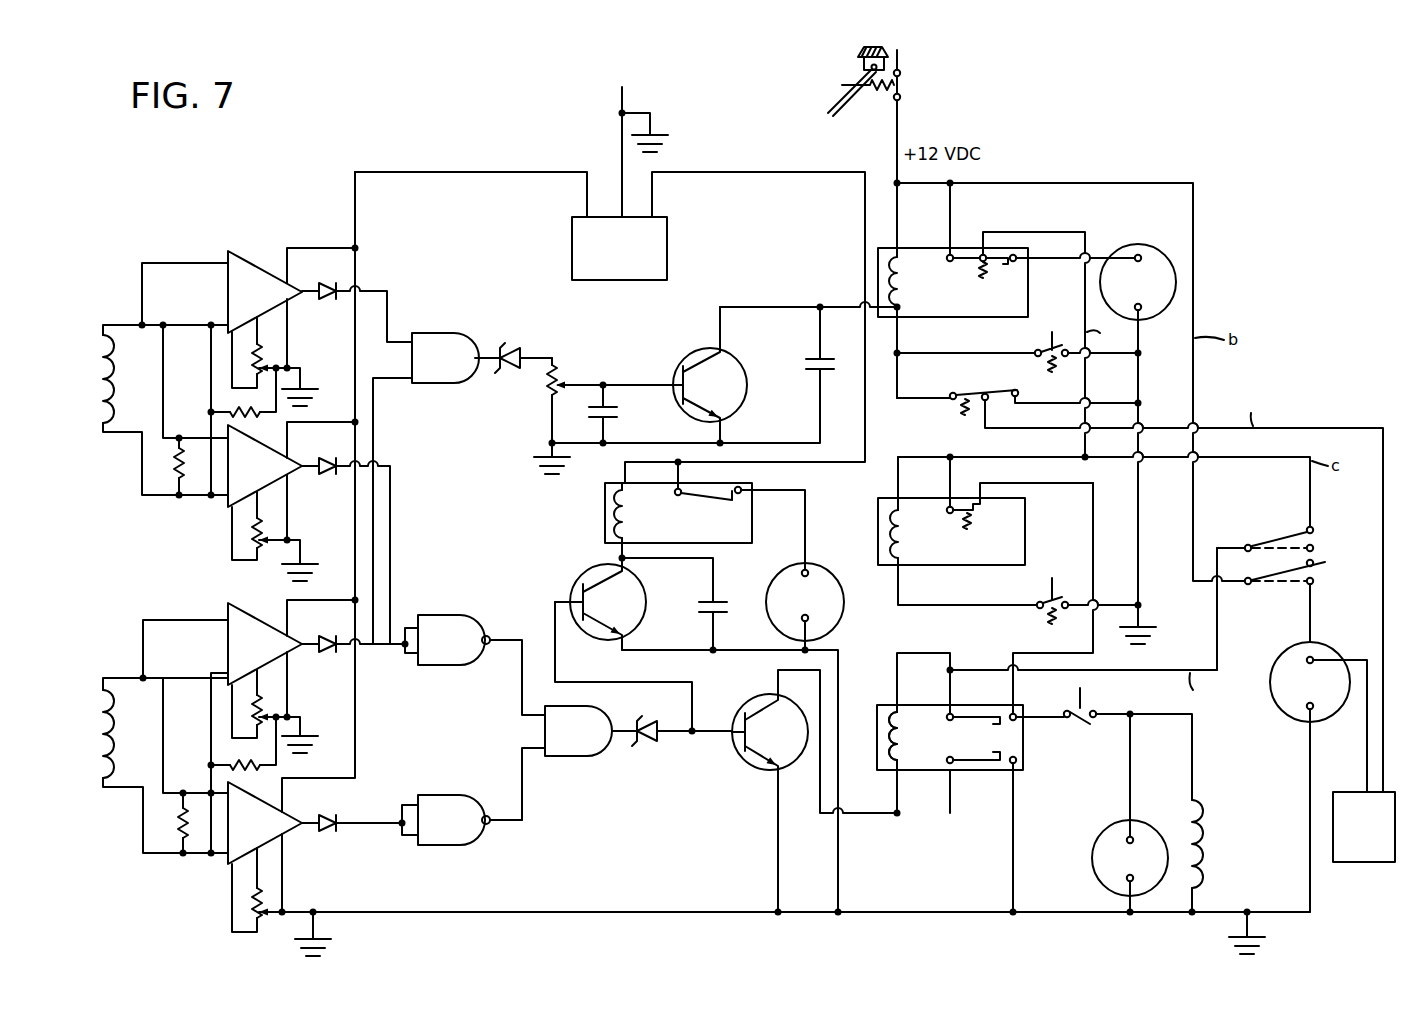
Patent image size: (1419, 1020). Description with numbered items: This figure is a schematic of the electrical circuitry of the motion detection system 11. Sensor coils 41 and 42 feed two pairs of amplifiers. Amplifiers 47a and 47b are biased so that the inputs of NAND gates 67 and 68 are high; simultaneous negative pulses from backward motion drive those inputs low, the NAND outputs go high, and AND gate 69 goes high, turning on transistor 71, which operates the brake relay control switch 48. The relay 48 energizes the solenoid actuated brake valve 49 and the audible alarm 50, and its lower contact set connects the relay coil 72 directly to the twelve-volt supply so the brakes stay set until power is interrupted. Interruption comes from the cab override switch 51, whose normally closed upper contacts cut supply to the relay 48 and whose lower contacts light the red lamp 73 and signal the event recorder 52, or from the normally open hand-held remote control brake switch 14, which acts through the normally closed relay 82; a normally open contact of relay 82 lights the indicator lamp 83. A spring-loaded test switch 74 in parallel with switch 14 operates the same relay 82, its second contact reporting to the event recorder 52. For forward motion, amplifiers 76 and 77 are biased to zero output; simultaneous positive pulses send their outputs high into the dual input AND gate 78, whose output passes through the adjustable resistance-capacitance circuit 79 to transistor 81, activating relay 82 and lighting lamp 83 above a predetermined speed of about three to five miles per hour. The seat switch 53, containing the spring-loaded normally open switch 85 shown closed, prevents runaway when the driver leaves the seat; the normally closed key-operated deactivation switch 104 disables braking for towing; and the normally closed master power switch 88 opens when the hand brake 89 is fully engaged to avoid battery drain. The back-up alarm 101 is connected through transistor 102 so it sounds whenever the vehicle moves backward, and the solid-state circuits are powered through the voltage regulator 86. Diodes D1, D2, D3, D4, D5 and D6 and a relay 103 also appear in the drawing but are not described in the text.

The motion detection system 11 is at (193, 210).
The sensor coil 42 is at (116, 394).
The sensor coil 41 is at (120, 746).
The amplifier 77 is at (265, 302).
The amplifier 47b is at (272, 477).
The amplifier 76 is at (265, 655).
The amplifier 47a is at (272, 834).
The diode D1 is at (357, 312).
The diode D2 is at (346, 551).
The diode D3 is at (355, 657).
The diode D4 is at (360, 831).
The zener diode D5 is at (523, 368).
The zener diode D6 is at (682, 741).
The dual input AND gate 78 is at (449, 370).
The resistance-capacitance circuit 79 is at (558, 382).
The transistor 81 is at (721, 396).
The voltage regulator 86 is at (631, 276).
The relay 103 is at (693, 527).
The transistor 102 is at (626, 614).
The back-up alarm 101 is at (823, 610).
The NAND gate 68 is at (456, 652).
The AND gate 69 is at (582, 743).
The NAND gate 67 is at (456, 832).
The transistor 71 is at (780, 744).
The relay coil 72 is at (875, 732).
The brake relay control switch 48 is at (942, 752).
The deactivation switch 104 is at (1104, 743).
The audible alarm 50 is at (1142, 870).
The solenoid actuated brake valve 49 is at (1208, 822).
The relay 82 is at (971, 314).
The indicator lamp 83 is at (1151, 294).
The hand-held remote control brake switch 14 is at (1052, 334).
The test switch 74 is at (956, 391).
The seat switch 53 is at (886, 575).
The spring-loaded normally open switch 85 is at (1048, 594).
The cab override switch 51 is at (1318, 553).
The red lamp 73 is at (1322, 694).
The event recorder 52 is at (1374, 837).
The master power switch 88 is at (900, 84).
The hand brake 89 is at (828, 100).